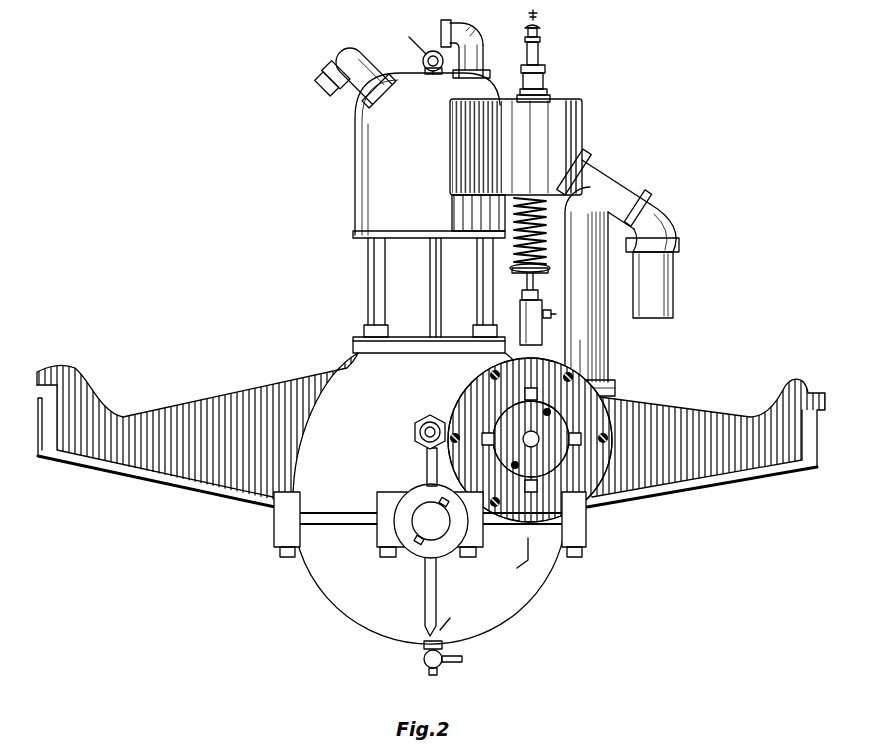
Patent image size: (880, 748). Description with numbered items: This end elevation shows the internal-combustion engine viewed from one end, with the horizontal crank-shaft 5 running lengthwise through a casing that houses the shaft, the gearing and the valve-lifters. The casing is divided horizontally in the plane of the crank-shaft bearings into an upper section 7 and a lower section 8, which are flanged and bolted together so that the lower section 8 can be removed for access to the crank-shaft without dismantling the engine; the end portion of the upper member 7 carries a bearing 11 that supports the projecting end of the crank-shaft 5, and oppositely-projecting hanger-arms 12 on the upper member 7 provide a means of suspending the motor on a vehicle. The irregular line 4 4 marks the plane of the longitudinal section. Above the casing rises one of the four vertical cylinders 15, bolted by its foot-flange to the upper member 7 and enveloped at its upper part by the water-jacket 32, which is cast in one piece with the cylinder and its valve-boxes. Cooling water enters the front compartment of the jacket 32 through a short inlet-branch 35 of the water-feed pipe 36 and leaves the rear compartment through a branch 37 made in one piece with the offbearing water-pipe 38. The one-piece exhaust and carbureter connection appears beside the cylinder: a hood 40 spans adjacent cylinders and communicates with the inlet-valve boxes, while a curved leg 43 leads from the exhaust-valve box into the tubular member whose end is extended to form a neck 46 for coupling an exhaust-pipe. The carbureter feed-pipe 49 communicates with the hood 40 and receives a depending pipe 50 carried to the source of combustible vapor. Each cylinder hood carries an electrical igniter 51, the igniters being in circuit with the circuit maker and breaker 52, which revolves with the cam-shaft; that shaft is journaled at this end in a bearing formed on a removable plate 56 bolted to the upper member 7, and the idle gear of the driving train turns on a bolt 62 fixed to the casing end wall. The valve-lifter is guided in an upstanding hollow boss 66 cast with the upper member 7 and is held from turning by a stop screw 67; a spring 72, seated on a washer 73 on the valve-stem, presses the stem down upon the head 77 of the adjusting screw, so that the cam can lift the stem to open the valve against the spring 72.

The section line 4 4 is at (443, 632).
The crank-shaft 5 is at (428, 530).
The upper section of casing 7 is at (407, 426).
The lower section of casing 8 is at (350, 600).
The bearings 11 is at (380, 544).
The hanger-arms 12 is at (160, 482).
The vertical cylinders 15 is at (398, 272).
The water-jacket 32 is at (378, 160).
The inlet-branch 35 is at (484, 54).
The water-feed pipe 36 is at (470, 23).
The branches 37 is at (395, 70).
The offbearing water-pipe 38 is at (324, 72).
The hood 40 is at (612, 184).
The legs 43 is at (594, 312).
The neck 46 is at (606, 358).
The carbureter feed-pipe 49 is at (654, 216).
The depending pipe 50 is at (674, 277).
The electrical igniter 51 is at (546, 68).
The circuit maker and breaker 52 is at (558, 460).
The removable plate 56 is at (616, 397).
The bolt 62 is at (420, 434).
The hollow boss 66 is at (530, 329).
The stop screw 67 is at (548, 313).
The spring 72 is at (538, 245).
The washer 73 is at (536, 275).
The head of screw 77 is at (527, 293).